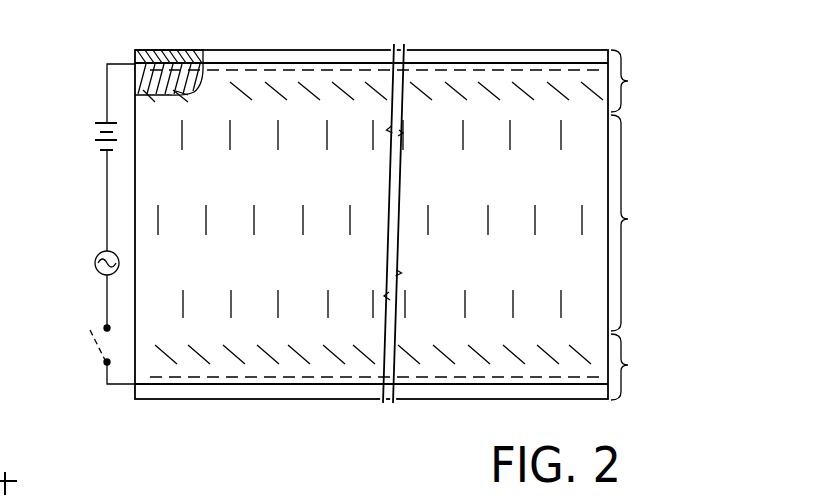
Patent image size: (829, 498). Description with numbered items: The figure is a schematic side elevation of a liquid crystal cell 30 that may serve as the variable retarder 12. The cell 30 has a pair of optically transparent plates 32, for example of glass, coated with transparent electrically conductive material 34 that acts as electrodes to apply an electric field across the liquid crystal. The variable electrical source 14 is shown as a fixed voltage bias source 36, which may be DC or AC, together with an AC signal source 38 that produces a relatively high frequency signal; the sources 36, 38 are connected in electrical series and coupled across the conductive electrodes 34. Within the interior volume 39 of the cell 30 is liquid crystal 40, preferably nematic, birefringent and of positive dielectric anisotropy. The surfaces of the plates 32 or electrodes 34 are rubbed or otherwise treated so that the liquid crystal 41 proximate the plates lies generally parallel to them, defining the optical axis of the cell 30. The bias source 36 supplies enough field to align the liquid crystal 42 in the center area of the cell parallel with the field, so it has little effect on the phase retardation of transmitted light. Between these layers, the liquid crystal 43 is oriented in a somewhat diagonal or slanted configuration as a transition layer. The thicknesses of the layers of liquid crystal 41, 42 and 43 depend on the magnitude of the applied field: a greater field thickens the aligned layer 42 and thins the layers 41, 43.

The variable retarder 12 is at (584, 40).
The variable electrical source 14 is at (72, 88).
The liquid crystal cell 30 is at (652, 50).
The optically transparent plates 32 is at (470, 50).
The transparent electrically conductive material 34 is at (342, 70).
The bias source 36 is at (93, 141).
The AC signal source 38 is at (96, 256).
The interior volume 39 is at (160, 283).
The liquid crystal 40 is at (592, 145).
The liquid crystal proximate the plates 41 is at (543, 63).
The field-aligned liquid crystal 42 is at (560, 148).
The transition layer liquid crystal 43 is at (522, 94).